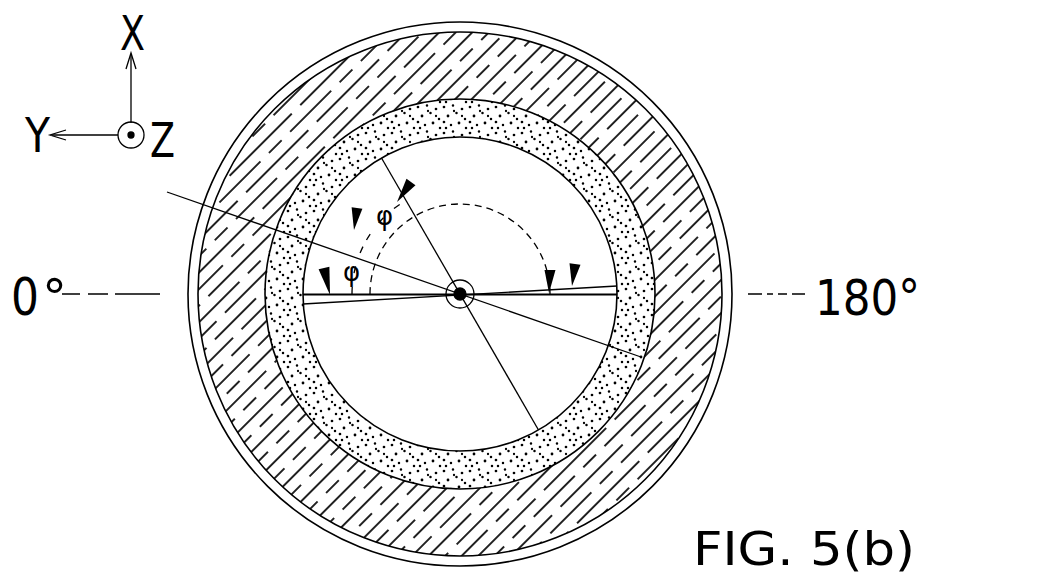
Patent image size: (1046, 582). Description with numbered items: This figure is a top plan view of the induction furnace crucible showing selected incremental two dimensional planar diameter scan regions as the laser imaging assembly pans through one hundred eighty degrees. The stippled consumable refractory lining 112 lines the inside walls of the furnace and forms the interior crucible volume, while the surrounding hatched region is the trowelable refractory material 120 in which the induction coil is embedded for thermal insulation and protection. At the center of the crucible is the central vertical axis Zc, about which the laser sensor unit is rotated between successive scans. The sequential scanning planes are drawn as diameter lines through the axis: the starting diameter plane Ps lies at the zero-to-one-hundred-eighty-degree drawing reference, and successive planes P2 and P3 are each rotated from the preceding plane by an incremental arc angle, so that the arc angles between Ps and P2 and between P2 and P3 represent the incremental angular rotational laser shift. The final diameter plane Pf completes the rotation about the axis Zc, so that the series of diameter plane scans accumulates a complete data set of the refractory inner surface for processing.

The consumable refractory lining 112 is at (656, 264).
The trowelable refractory material 120 is at (704, 376).
The starting sample diameter scanning plane Ps is at (325, 272).
The second sample diameter scanning plane P2 is at (357, 211).
The third sample diameter scanning plane P3 is at (411, 182).
The final sample diameter scanning plane Pf is at (575, 264).
The central vertical axis Zc is at (452, 307).